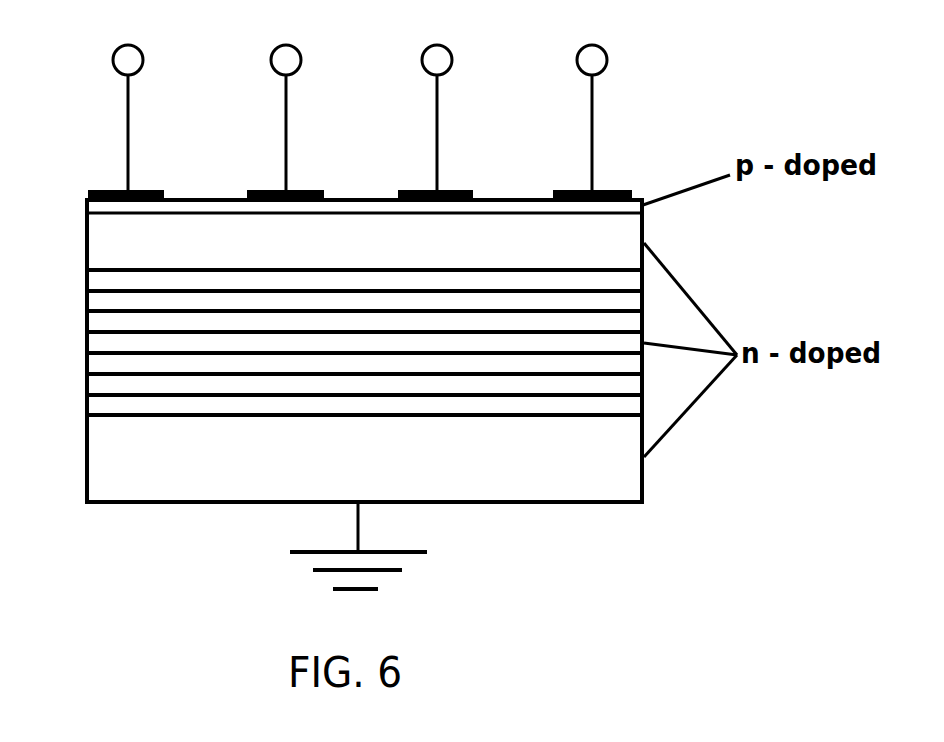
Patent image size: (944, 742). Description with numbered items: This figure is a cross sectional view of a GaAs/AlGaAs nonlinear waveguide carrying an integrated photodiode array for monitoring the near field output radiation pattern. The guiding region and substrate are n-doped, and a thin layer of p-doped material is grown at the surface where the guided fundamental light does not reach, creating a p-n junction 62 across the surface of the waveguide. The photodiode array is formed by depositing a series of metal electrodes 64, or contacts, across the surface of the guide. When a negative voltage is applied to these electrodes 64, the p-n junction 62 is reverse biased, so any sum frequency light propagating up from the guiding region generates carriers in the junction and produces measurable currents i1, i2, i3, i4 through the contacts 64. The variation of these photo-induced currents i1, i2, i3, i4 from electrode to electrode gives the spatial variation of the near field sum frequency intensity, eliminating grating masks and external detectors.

The p-n junction 62 is at (88, 215).
The metal electrodes 64 is at (142, 190).
The injection current to first electrode i1 is at (150, 98).
The injection current to second electrode i2 is at (307, 98).
The injection current to third electrode i3 is at (459, 98).
The injection current to fourth electrode i4 is at (615, 98).